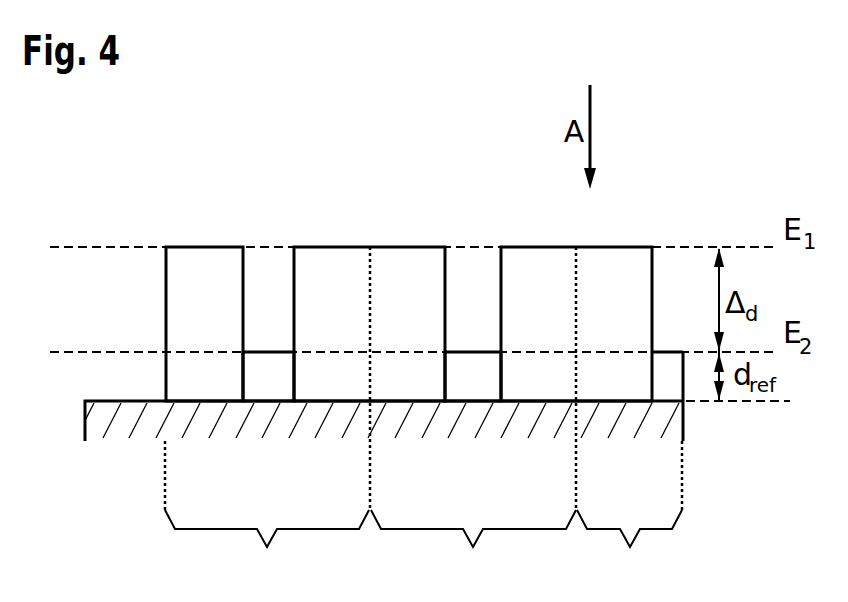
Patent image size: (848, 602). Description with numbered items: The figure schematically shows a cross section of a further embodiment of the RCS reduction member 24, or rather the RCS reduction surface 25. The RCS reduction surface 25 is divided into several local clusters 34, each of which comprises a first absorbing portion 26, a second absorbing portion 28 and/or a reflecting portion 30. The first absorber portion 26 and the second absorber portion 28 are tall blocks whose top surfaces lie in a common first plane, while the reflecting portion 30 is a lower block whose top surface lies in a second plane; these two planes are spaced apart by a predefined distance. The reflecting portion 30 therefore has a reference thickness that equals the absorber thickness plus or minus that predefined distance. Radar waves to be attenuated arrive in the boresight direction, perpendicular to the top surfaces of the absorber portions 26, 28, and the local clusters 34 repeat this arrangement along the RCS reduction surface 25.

The RCS reduction member 24 is at (424, 341).
The RCS reduction surface 25 is at (424, 341).
The first absorber portion 26 is at (202, 268).
The second absorber portion 28 is at (318, 268).
The reflecting portion 30 is at (267, 372).
The local cluster 34 is at (423, 513).